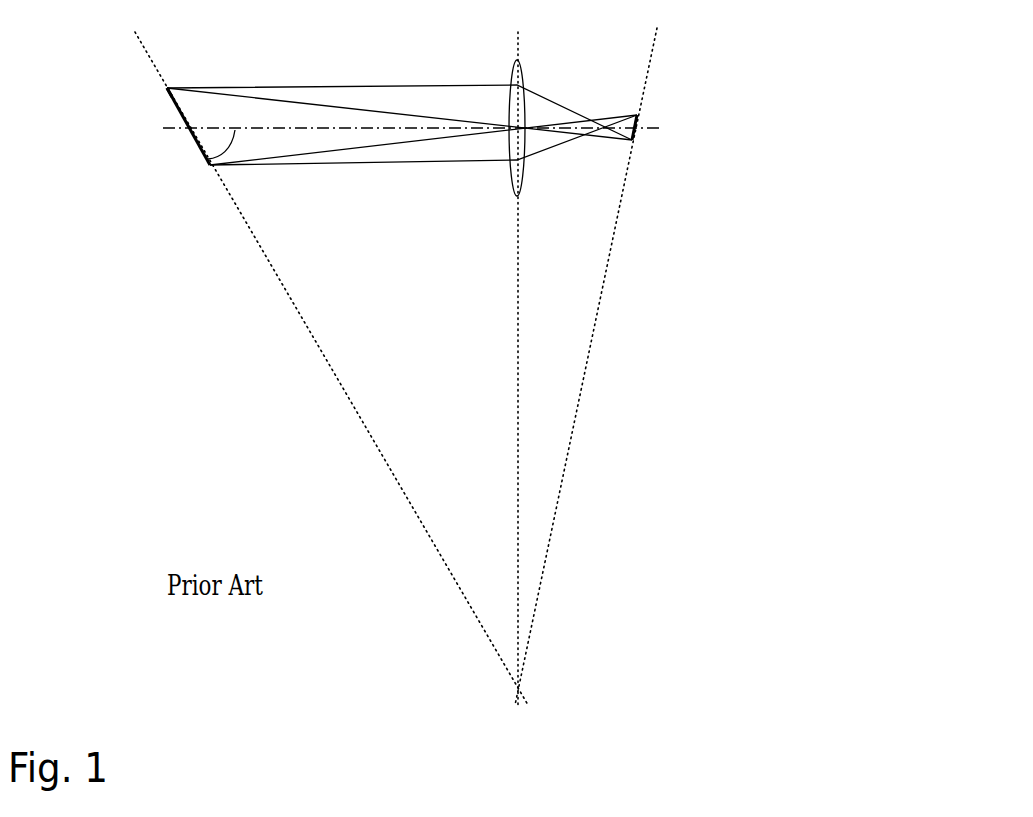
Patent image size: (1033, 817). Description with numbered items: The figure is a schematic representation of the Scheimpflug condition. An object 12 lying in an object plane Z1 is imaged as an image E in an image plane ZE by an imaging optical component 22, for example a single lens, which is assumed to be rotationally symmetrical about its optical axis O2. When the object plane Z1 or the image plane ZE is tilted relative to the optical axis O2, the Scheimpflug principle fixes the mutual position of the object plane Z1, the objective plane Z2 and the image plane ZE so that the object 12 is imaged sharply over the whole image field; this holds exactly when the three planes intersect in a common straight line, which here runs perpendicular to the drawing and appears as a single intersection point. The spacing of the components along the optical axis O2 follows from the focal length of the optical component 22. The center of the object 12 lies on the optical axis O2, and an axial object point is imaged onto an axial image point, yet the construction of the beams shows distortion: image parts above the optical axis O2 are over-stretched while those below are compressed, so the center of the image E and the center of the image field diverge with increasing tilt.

The object 12 is at (638, 118).
The imaging optical component 22 is at (527, 113).
The image E is at (170, 97).
The optical axis O2 is at (208, 159).
The image plane ZE is at (286, 291).
The object plane Z1 is at (605, 280).
The objective plane Z2 is at (518, 377).